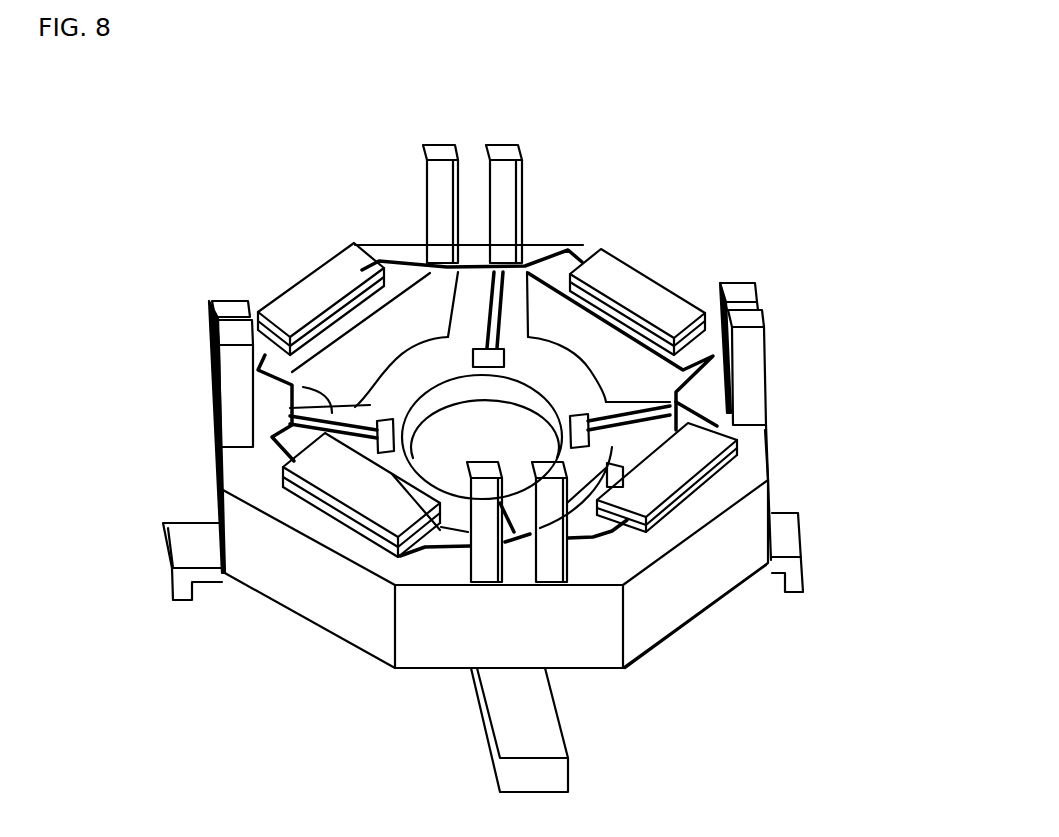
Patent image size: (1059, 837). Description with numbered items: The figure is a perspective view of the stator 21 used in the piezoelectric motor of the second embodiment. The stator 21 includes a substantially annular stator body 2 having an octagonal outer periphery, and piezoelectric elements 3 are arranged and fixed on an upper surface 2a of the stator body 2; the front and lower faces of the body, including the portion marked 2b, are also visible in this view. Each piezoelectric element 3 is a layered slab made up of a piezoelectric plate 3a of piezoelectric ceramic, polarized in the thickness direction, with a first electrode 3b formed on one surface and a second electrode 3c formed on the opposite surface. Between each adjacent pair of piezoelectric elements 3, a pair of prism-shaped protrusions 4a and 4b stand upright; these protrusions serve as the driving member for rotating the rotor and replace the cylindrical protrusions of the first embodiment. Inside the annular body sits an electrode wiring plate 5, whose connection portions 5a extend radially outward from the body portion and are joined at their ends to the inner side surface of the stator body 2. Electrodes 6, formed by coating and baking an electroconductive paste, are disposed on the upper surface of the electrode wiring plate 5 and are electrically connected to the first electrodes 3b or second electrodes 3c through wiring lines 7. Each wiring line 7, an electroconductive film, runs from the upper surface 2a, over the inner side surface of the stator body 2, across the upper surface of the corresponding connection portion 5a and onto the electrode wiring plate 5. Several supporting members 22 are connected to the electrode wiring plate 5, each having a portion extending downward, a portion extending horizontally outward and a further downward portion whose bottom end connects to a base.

The stator body 2 is at (495, 501).
The upper surface 2a is at (447, 562).
The base bottom portion 2b is at (565, 670).
The piezoelectric element 3 is at (454, 444).
The piezoelectric plate 3a is at (340, 510).
The first electrode 3b is at (323, 477).
The second electrode 3c is at (355, 525).
The prism-shaped protrusion 4a is at (433, 143).
The prism-shaped protrusion 4b is at (497, 143).
The electrode wiring plate 5 is at (509, 350).
The connection portion 5a is at (443, 322).
The electrode 6 is at (507, 356).
The wiring line 7 is at (413, 263).
The stator 21 is at (276, 220).
The supporting member 22 is at (178, 510).